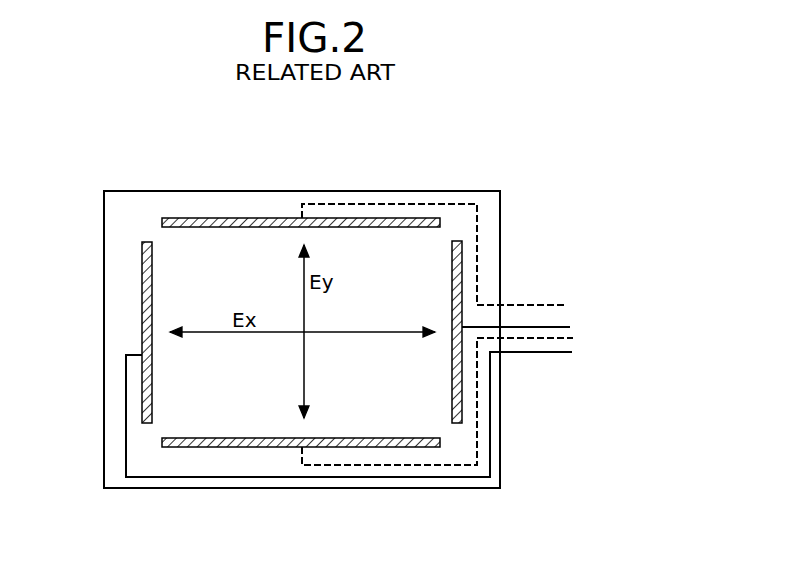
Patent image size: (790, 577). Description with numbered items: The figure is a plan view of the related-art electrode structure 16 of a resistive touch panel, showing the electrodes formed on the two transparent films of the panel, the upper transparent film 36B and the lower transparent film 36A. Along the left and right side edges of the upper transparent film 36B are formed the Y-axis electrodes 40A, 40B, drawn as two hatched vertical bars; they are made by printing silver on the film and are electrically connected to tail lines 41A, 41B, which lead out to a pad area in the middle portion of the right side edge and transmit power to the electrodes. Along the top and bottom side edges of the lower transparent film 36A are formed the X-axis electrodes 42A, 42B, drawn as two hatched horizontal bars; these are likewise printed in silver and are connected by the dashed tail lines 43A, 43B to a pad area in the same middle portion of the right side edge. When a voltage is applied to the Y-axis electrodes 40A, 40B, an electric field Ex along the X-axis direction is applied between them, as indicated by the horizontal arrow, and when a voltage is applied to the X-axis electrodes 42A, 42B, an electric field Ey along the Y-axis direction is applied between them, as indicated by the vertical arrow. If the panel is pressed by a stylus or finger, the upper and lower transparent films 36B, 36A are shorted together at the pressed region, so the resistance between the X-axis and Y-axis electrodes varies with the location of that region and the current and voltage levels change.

The touch panel (related art) 16 is at (636, 159).
The lower transparent film 36A is at (487, 191).
The upper transparent film 36B is at (302, 339).
The Y-axis electrode 40A is at (142, 279).
The Y-axis electrode 40B is at (462, 279).
The tail line 41A is at (570, 327).
The tail line 41B is at (572, 352).
The X-axis electrode 42A is at (281, 218).
The X-axis electrode 42B is at (200, 447).
The tail line 43A is at (567, 304).
The tail line 43B is at (573, 338).